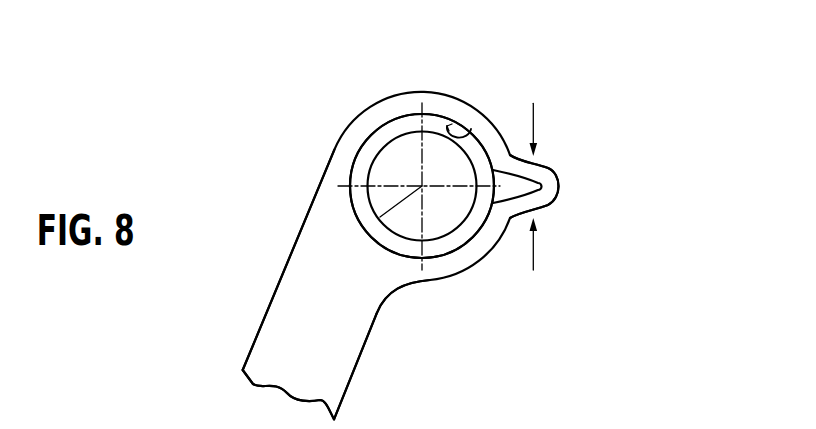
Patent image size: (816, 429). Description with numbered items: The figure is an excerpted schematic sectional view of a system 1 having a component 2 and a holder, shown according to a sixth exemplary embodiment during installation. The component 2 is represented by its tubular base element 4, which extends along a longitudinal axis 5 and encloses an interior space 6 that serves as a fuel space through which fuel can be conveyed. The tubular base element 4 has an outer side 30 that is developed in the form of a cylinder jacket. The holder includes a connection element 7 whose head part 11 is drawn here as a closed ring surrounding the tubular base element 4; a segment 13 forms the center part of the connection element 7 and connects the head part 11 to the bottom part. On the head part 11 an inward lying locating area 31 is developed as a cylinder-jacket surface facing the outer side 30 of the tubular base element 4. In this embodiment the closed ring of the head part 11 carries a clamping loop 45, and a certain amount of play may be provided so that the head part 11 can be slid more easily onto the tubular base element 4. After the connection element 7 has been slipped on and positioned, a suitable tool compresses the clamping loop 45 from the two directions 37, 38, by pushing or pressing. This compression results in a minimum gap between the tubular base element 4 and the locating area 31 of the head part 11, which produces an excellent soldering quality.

The system 1 is at (620, 86).
The component 2 is at (390, 132).
The tubular base element 4 is at (422, 186).
The longitudinal axis 5 is at (363, 222).
The interior space 6 is at (402, 165).
The connection element 7 is at (325, 278).
The head part 11 is at (443, 107).
The segment 13 is at (302, 362).
The outer side 30 is at (384, 252).
The locating area 31 is at (470, 135).
The direction 37 is at (533, 122).
The direction 38 is at (533, 247).
The clamping loop 45 is at (548, 178).